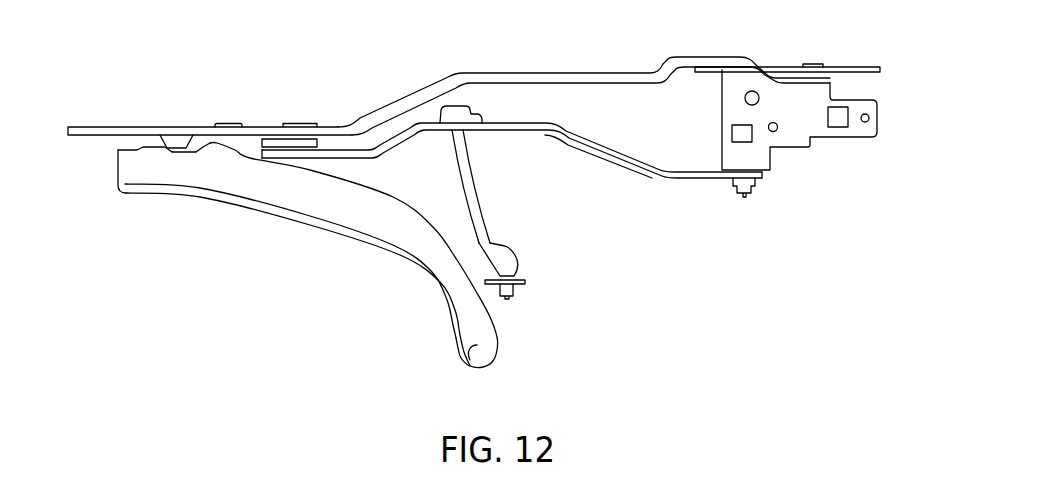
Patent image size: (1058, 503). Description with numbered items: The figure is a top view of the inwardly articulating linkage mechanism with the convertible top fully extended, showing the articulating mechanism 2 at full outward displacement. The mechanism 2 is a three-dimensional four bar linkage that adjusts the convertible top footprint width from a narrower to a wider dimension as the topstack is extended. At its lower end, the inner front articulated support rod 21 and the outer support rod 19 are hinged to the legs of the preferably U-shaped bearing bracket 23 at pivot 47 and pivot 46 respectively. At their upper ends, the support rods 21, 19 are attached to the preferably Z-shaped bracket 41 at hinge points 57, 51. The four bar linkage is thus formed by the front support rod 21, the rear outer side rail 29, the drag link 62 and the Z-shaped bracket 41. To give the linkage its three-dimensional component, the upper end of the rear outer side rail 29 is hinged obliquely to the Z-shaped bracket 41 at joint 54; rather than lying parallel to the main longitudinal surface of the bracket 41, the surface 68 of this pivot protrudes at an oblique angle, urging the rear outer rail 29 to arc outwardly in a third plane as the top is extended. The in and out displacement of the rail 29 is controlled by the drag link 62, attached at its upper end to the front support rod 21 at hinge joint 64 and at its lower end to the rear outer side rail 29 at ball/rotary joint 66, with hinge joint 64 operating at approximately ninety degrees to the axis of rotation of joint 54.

The articulating mechanism 2 is at (308, 254).
The outer support rod 19 is at (611, 73).
The front articulated support rod 21 is at (387, 137).
The bearing bracket 23 is at (867, 137).
The rear outer side rail 29 is at (241, 216).
The Z-shaped bracket 41 is at (139, 127).
The pivot 46 is at (815, 64).
The pivot 47 is at (743, 197).
The hinge point 51 is at (295, 115).
The joint 54 is at (188, 143).
The hinge point 57 is at (231, 115).
The drag link 62 is at (495, 206).
The hinge joint 64 is at (464, 99).
The ball/rotary joint 66 is at (525, 283).
The surface 68 is at (157, 196).